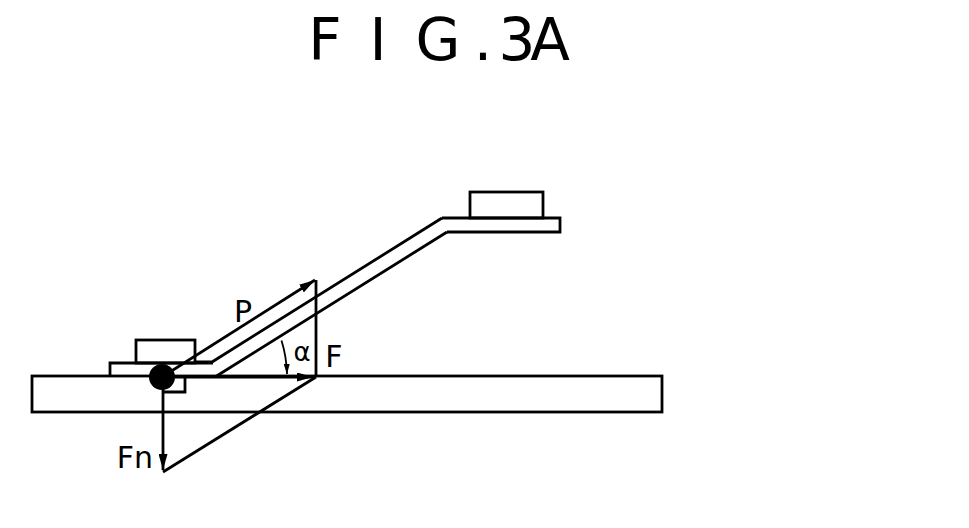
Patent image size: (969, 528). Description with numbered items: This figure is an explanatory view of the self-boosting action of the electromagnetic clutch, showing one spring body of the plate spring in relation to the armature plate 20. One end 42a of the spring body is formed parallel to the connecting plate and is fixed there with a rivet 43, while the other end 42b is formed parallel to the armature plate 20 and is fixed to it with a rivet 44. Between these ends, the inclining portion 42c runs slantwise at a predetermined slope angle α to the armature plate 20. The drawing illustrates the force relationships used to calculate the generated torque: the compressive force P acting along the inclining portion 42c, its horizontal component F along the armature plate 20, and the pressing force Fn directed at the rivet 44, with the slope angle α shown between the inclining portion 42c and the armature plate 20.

The armature plate 20 is at (542, 413).
The one end of spring body 42a is at (552, 233).
The other end of spring body 42b is at (117, 361).
The inclining portion 42c is at (363, 268).
The rivet 43 is at (506, 198).
The rivet 44 is at (167, 339).